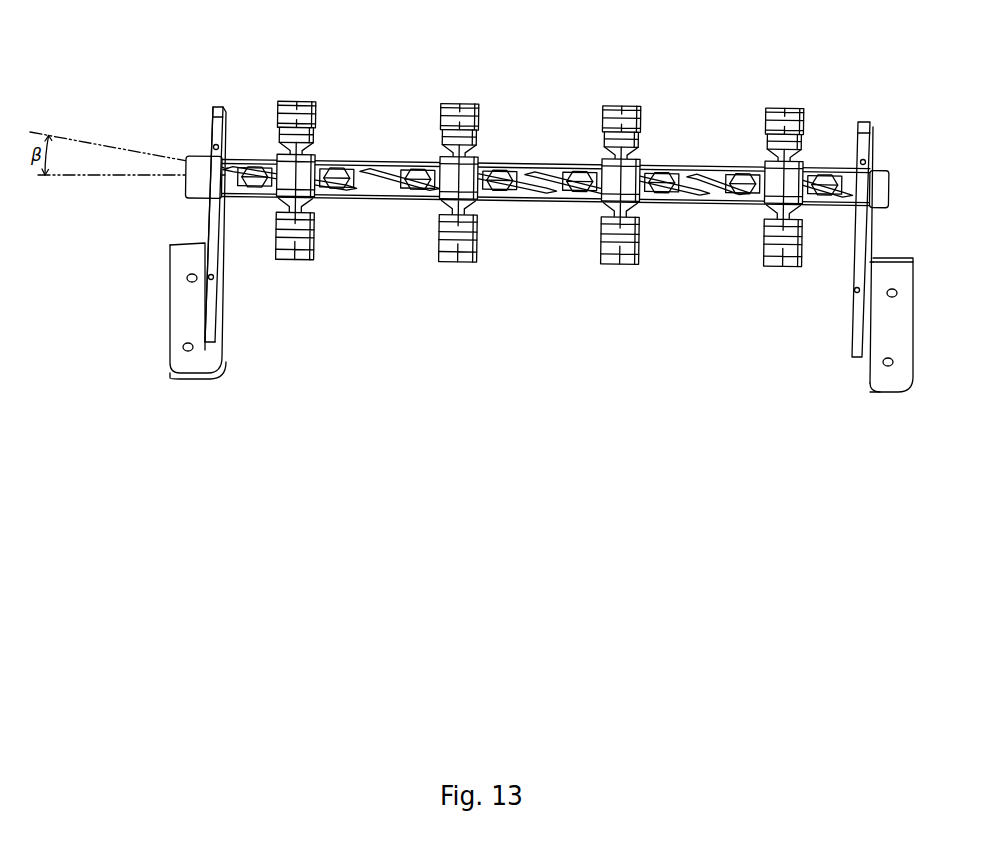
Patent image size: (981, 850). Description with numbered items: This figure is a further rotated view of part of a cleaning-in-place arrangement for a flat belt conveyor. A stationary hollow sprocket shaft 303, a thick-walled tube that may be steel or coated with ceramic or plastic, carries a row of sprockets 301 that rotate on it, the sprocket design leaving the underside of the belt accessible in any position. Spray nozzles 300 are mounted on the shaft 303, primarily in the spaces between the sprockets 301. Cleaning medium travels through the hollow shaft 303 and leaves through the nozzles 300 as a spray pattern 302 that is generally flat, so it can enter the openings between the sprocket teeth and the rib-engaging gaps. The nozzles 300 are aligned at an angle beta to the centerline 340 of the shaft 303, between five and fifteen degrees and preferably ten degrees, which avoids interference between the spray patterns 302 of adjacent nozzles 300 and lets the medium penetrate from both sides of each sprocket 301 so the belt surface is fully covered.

The spray nozzle 300 is at (420, 160).
The sprocket 301 is at (297, 242).
The spray pattern 302 is at (422, 187).
The sprocket shaft 303 is at (238, 158).
The centerline of the shaft 340 is at (140, 178).